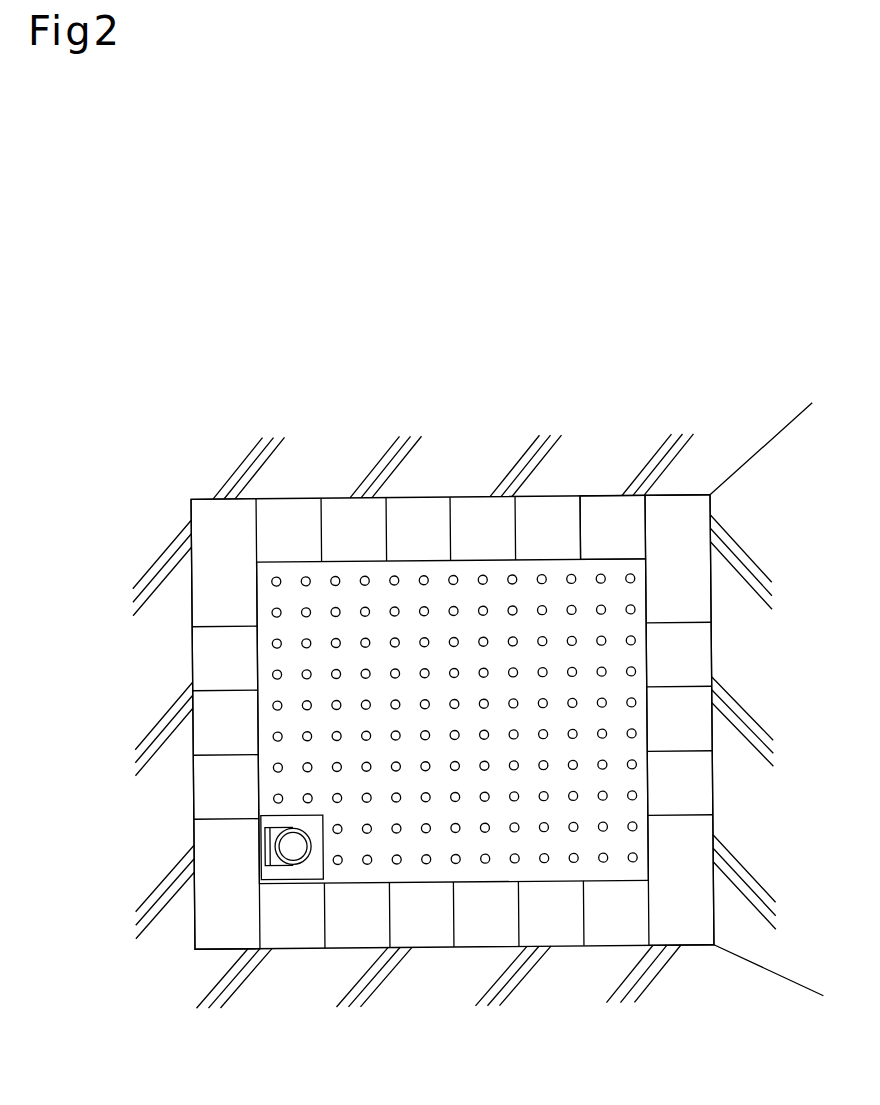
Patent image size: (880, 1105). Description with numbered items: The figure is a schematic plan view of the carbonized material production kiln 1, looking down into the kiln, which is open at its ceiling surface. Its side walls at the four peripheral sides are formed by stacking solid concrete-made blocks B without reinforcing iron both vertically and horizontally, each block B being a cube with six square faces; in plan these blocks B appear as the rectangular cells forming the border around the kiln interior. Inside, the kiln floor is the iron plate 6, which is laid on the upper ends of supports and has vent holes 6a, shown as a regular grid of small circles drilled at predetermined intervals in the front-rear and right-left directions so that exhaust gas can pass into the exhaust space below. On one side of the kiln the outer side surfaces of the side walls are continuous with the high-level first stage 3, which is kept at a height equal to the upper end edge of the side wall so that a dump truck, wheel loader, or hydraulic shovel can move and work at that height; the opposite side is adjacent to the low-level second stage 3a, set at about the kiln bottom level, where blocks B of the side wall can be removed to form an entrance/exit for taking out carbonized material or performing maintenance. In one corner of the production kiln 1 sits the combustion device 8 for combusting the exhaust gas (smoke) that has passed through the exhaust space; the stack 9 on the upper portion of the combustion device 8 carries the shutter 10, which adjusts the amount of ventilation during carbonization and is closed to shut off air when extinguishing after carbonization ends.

The carbonized material production kiln 1 is at (347, 606).
The iron plate 6 is at (483, 598).
The vent hole 6a is at (638, 795).
The block B is at (606, 522).
The first stage 3 is at (125, 700).
The second stage 3a is at (840, 703).
The combustion device 8 is at (305, 870).
The stack 9 is at (277, 866).
The shutter 10 is at (265, 847).